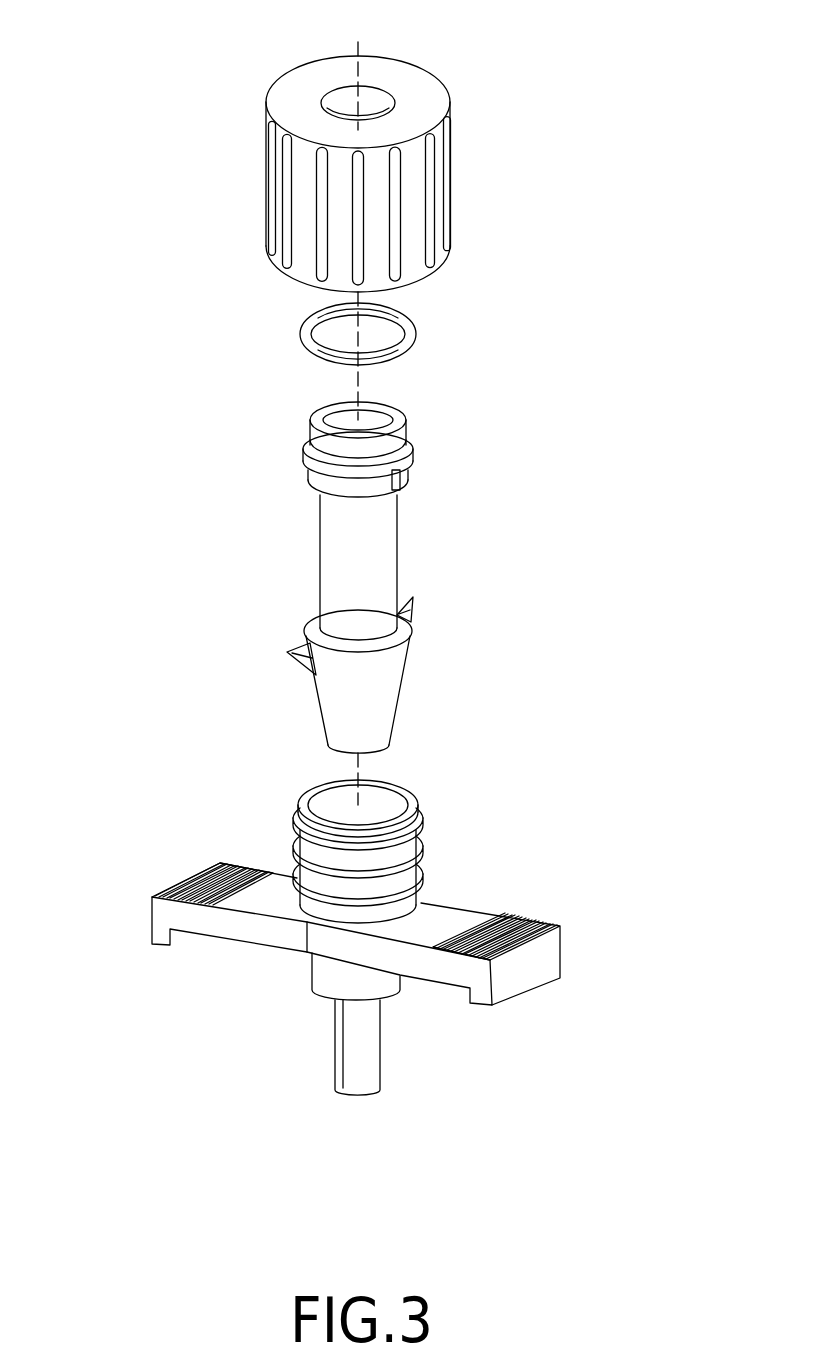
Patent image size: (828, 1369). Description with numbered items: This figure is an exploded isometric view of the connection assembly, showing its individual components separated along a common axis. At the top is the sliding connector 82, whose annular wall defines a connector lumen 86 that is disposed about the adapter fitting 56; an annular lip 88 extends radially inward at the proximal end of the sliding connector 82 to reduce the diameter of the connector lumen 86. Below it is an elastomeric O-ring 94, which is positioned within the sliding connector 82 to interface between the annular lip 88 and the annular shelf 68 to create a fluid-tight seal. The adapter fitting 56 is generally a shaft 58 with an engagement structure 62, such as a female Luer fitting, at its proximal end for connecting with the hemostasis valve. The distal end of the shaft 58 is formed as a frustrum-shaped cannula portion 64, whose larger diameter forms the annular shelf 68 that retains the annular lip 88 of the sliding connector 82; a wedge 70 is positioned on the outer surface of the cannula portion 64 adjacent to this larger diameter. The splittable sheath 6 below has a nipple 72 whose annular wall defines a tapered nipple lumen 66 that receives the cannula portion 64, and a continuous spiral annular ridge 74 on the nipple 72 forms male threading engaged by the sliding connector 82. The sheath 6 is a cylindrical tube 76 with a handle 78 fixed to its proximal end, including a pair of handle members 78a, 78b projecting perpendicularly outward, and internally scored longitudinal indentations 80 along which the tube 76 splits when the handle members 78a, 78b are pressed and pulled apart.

The splittable sheath 6 is at (390, 1003).
The adapter fitting 56 is at (320, 525).
The shaft 58 is at (385, 517).
The engagement structure 62 is at (410, 450).
The cannula portion 64 is at (382, 680).
The nipple lumen 66 is at (372, 805).
The annular shelf 68 is at (313, 628).
The wedge 70 is at (303, 650).
The nipple 72 is at (395, 852).
The annular ridge 74 is at (425, 820).
The tube 76 is at (365, 1055).
The handle 78 is at (369, 937).
The handle member 78a is at (150, 917).
The handle member 78b is at (548, 963).
The indentations 80 is at (335, 1060).
The sliding connector 82 is at (440, 190).
The connector lumen 86 is at (362, 118).
The annular lip 88 is at (427, 92).
The O-ring 94 is at (415, 340).